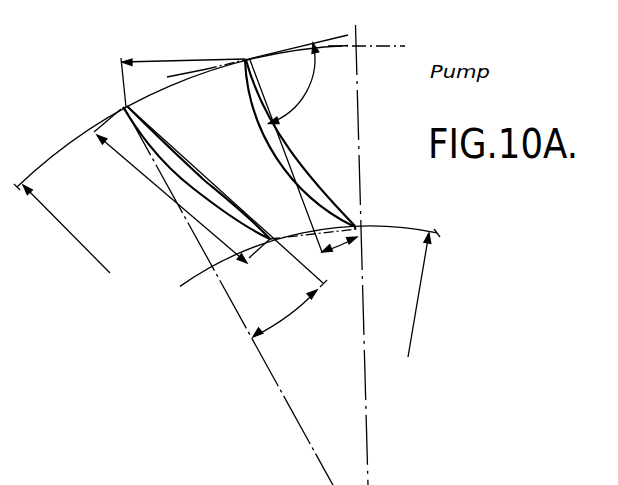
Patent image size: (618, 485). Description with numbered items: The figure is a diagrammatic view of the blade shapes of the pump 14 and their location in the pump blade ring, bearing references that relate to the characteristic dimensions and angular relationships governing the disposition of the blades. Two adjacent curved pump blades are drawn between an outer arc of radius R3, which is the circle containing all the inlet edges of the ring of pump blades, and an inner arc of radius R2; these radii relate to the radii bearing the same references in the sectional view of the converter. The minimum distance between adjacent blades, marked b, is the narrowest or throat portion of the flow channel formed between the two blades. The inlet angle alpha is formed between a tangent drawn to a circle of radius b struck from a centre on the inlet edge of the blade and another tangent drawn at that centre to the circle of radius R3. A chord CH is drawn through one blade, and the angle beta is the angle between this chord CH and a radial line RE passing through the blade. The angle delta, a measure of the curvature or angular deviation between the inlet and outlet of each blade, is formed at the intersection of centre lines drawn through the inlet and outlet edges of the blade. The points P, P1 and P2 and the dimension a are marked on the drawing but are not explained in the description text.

The pump 14 is at (312, 172).
The blade trailing edge point on inner radius P is at (333, 198).
The trailing edge point of adjacent blade P1 is at (294, 214).
The blade leading edge point on outer radius P2 is at (247, 58).
The chord CH is at (183, 154).
The radial line RE is at (292, 416).
The radius R2 is at (408, 295).
The radius R3 is at (66, 229).
The chord length dimension a is at (148, 190).
The minimum distance between adjacent blades b is at (183, 74).